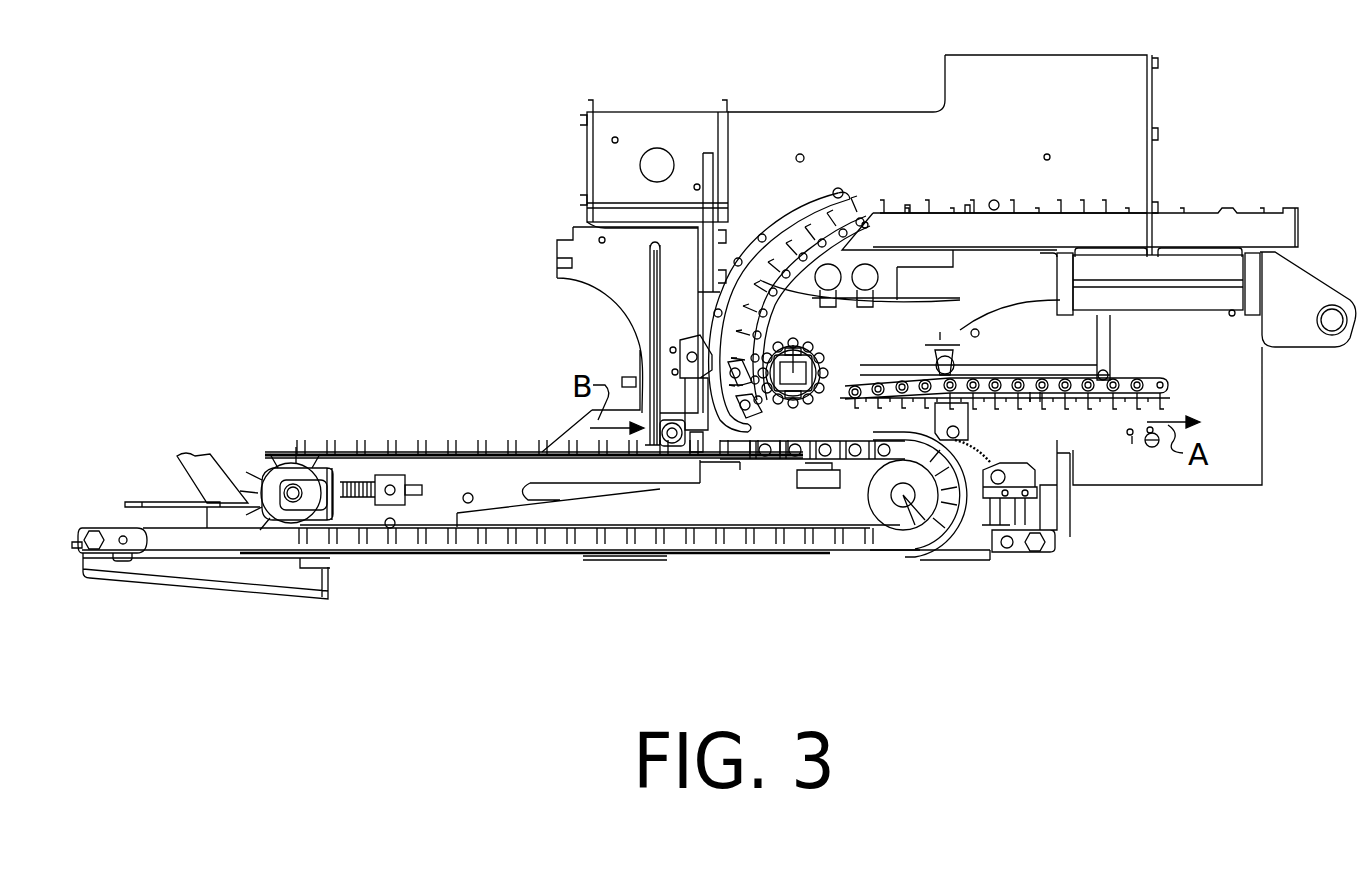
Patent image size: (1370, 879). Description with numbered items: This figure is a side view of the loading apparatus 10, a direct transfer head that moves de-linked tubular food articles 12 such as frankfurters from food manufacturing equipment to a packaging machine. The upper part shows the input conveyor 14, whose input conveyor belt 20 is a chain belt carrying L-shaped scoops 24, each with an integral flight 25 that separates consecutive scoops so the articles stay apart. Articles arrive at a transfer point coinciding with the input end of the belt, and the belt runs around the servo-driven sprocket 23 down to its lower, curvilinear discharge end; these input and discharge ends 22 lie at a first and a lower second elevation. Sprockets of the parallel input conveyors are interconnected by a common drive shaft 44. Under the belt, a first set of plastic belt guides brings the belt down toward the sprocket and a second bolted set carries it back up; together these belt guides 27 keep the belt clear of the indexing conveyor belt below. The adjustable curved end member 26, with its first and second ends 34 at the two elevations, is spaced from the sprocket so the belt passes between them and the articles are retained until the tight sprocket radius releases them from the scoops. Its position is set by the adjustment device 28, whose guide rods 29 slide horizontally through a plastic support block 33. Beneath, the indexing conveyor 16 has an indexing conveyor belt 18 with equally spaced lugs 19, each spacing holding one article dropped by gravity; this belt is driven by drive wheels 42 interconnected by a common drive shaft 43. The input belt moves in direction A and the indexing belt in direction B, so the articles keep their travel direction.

The loading apparatus 10 is at (596, 607).
The tubular food articles 12 is at (745, 406).
The input conveyor 14 is at (1024, 201).
The indexing conveyor 16 is at (390, 441).
The indexing conveyor belt 18 is at (541, 445).
The lugs 19 is at (301, 442).
The input conveyor belt 20 is at (1068, 212).
The input end and discharge end of the input conveyor belt 22 is at (945, 373).
The sprocket 23 is at (817, 357).
The L-shaped scoops 24 is at (968, 210).
The integral flight 25 is at (912, 208).
The adjustable curved end member 26 is at (803, 203).
The belt guides 27 is at (910, 331).
The adjustment device 28 is at (687, 367).
The guide rods 29 is at (628, 378).
The support block 33 is at (690, 347).
The ends of the curved end member 34 is at (778, 373).
The drive wheels 42 is at (263, 478).
The common drive shaft of the drive wheels 43 is at (294, 498).
The common drive shaft of the sprockets 44 is at (793, 350).